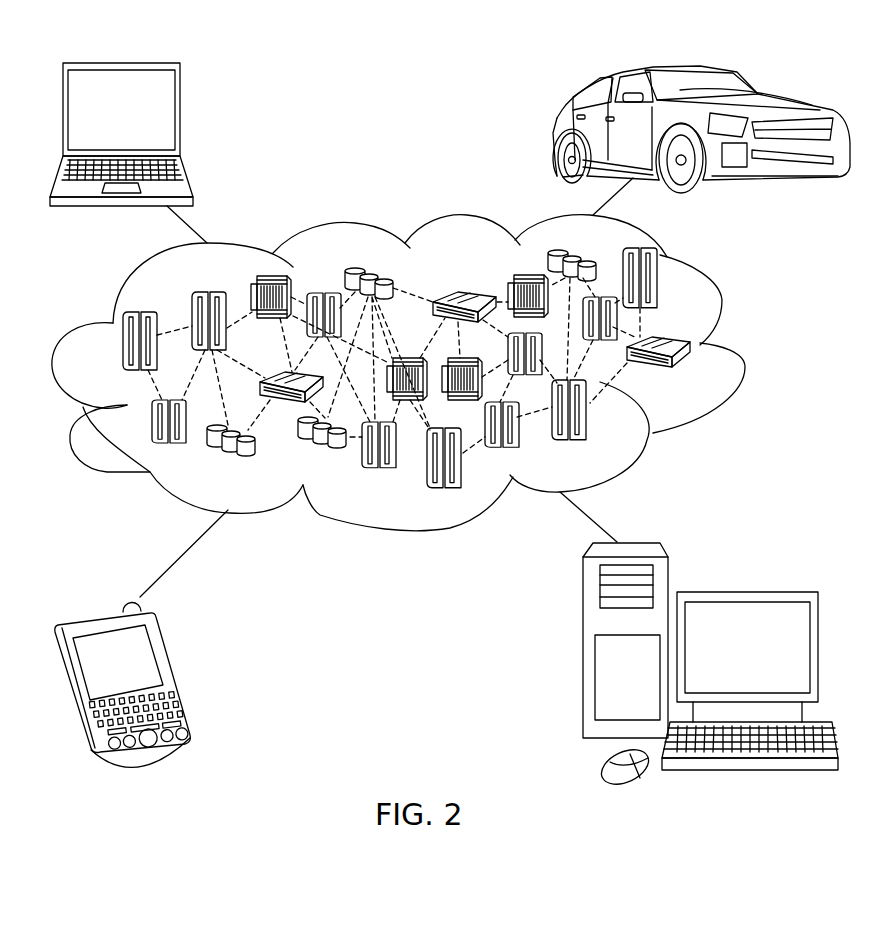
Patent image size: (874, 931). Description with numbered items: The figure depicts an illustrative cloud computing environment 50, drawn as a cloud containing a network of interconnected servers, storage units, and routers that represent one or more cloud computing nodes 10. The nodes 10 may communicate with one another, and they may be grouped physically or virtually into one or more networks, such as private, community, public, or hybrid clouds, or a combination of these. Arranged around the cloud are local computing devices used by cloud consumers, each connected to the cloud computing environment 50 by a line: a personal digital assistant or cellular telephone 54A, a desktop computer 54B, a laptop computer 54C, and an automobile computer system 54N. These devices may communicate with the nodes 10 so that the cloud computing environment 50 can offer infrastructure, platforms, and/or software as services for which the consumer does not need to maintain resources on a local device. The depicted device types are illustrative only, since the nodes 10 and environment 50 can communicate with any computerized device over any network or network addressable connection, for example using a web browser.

The cloud computing node 10 is at (700, 378).
The cloud computing environment 50 is at (745, 350).
The personal digital assistant or cellular telephone 54A is at (175, 672).
The desktop computer 54B is at (743, 592).
The laptop computer 54C is at (180, 117).
The automobile computer system 54N is at (557, 134).